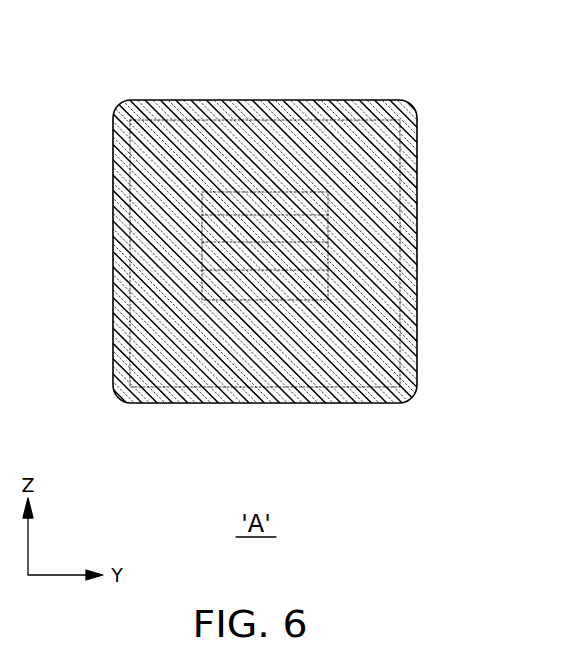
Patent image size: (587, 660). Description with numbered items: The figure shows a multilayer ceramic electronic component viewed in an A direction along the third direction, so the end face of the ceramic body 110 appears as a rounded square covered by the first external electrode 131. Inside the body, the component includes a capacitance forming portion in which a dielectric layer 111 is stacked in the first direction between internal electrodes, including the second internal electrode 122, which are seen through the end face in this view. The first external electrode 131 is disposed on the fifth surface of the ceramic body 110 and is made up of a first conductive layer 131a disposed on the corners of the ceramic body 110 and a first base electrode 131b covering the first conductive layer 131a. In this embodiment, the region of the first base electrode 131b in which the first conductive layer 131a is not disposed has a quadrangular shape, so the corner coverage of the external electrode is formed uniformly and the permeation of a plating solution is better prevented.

The ceramic body 110 is at (323, 103).
The dielectric layer 111 is at (328, 228).
The second internal electrode 122 is at (328, 260).
The first external electrode 131 is at (127, 43).
The first conductive layer 131a is at (162, 100).
The first base electrode 131b is at (255, 107).